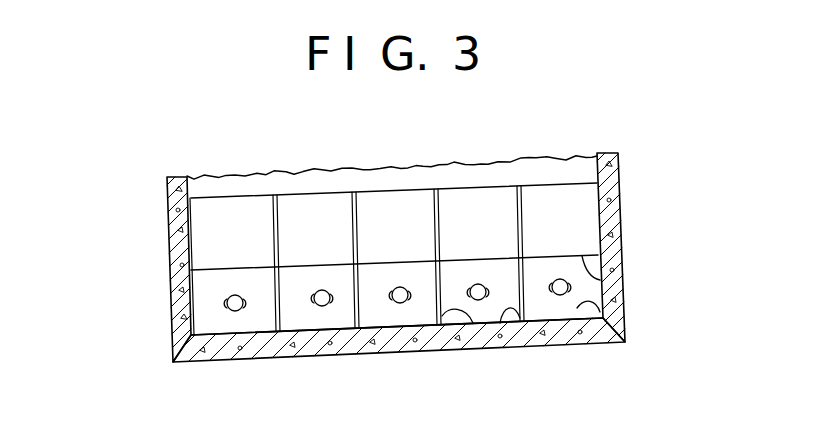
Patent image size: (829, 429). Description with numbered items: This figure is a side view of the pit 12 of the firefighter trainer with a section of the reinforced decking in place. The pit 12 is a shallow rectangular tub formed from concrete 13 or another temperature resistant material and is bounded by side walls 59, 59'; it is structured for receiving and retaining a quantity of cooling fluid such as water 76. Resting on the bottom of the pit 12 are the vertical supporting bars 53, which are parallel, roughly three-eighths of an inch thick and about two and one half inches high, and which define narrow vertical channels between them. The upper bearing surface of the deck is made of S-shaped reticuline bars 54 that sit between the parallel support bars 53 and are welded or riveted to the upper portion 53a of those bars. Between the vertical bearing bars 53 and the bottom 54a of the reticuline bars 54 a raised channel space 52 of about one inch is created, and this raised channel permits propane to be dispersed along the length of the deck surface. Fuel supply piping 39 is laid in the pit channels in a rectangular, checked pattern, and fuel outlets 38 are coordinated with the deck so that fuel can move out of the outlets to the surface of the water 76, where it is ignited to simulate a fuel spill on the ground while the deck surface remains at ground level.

The pit 12 is at (140, 183).
The concrete 13 is at (583, 343).
The fuel outlets 38 is at (246, 301).
The fuel supply piping 39 is at (228, 294).
The raised channel space 52 is at (400, 315).
The vertical supporting bars 53 is at (512, 310).
The upper portion of support bars 53a is at (167, 197).
The S-shaped reticuline bars 54 is at (552, 216).
The bottom of reticuline bars 54a is at (615, 282).
The side wall 59 is at (651, 244).
The side wall 59' is at (125, 269).
The water 76 is at (517, 158).